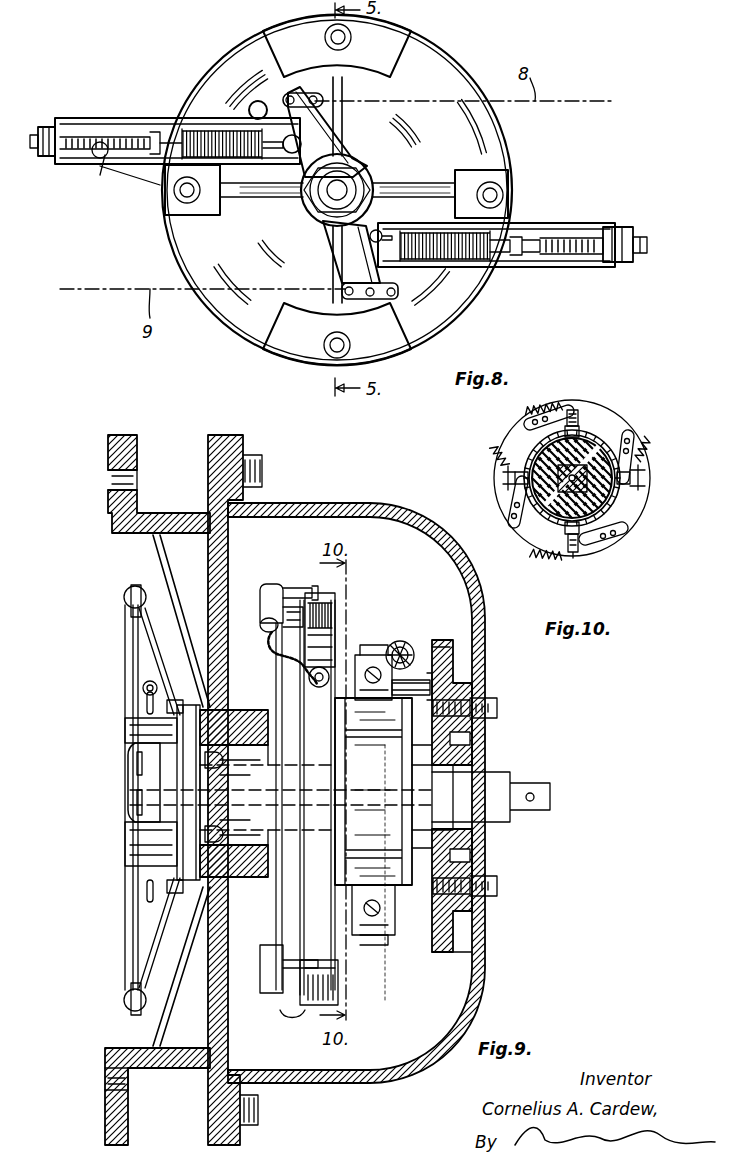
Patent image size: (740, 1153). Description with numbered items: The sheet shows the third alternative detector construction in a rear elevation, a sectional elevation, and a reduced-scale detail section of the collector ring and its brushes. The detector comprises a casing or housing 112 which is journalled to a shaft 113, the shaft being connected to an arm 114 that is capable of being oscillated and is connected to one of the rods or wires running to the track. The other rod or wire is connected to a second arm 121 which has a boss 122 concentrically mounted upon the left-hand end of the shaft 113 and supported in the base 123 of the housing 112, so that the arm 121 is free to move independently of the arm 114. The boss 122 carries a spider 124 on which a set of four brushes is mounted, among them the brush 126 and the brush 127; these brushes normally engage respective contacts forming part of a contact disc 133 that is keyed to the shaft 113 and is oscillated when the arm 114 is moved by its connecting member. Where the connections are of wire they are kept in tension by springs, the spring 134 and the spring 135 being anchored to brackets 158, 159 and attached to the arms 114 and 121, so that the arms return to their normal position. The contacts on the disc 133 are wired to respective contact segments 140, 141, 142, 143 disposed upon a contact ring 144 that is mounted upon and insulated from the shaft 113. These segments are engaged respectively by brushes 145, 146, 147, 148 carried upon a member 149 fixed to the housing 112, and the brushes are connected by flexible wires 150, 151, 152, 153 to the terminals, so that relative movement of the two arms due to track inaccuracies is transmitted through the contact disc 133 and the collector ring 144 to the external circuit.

In FIG. 10, the casing or housing 112 is at (572, 505).
In FIG. 9, the casing or housing 112 is at (320, 503).
In FIG. 8, the shaft 113 is at (337, 190).
In FIG. 10, the shaft 113 is at (556, 485).
In FIG. 9, the shaft 113 is at (495, 797).
In FIG. 8, the arm 114 is at (308, 132).
In FIG. 9, the arm 114 is at (128, 660).
In FIG. 8, the second arm 121 is at (360, 260).
In FIG. 9, the second arm 121 is at (125, 920).
In FIG. 9, the boss 122 is at (110, 797).
In FIG. 8, the base 123 is at (336, 190).
In FIG. 9, the base 123 is at (112, 508).
In FIG. 9, the spider 124 is at (272, 584).
In FIG. 9, the brush 126 is at (335, 670).
In FIG. 9, the brush 127 is at (300, 1010).
In FIG. 9, the contact disc 133 is at (304, 740).
In FIG. 8, the spring 134 is at (165, 190).
In FIG. 8, the spring 135 is at (480, 267).
In FIG. 10, the contact segment 140 is at (590, 440).
In FIG. 9, the contact segment 140 is at (402, 755).
In FIG. 10, the contact segment 141 is at (527, 478).
In FIG. 9, the contact segment 141 is at (453, 790).
In FIG. 10, the contact segment 142 is at (600, 520).
In FIG. 9, the contact segment 142 is at (395, 910).
In FIG. 10, the contact segment 143 is at (628, 435).
In FIG. 10, the contact ring 144 is at (540, 425).
In FIG. 9, the contact ring 144 is at (412, 760).
In FIG. 10, the brush 145 is at (578, 410).
In FIG. 9, the brush 145 is at (405, 642).
In FIG. 10, the brush 146 is at (520, 484).
In FIG. 10, the brush 147 is at (592, 545).
In FIG. 9, the brush 147 is at (385, 850).
In FIG. 10, the brush 148 is at (625, 480).
In FIG. 10, the member 149 is at (600, 440).
In FIG. 9, the member 149 is at (460, 650).
In FIG. 10, the flexible wire 150 is at (540, 406).
In FIG. 9, the flexible wire 150 is at (425, 680).
In FIG. 10, the flexible wire 151 is at (495, 450).
In FIG. 10, the flexible wire 152 is at (535, 556).
In FIG. 10, the flexible wire 153 is at (648, 440).
In FIG. 8, the bracket 158 is at (130, 100).
In FIG. 8, the bracket 159 is at (585, 223).